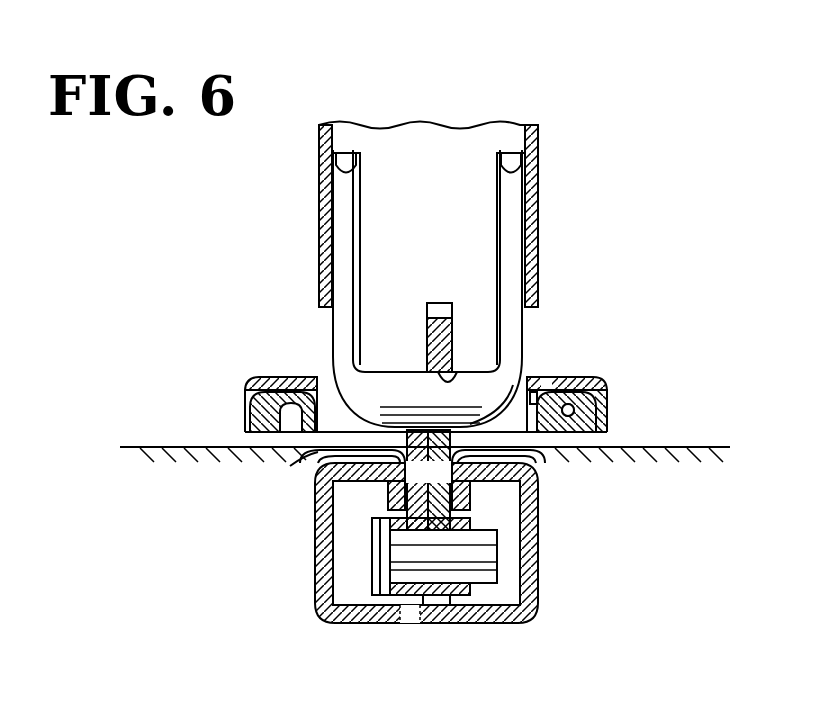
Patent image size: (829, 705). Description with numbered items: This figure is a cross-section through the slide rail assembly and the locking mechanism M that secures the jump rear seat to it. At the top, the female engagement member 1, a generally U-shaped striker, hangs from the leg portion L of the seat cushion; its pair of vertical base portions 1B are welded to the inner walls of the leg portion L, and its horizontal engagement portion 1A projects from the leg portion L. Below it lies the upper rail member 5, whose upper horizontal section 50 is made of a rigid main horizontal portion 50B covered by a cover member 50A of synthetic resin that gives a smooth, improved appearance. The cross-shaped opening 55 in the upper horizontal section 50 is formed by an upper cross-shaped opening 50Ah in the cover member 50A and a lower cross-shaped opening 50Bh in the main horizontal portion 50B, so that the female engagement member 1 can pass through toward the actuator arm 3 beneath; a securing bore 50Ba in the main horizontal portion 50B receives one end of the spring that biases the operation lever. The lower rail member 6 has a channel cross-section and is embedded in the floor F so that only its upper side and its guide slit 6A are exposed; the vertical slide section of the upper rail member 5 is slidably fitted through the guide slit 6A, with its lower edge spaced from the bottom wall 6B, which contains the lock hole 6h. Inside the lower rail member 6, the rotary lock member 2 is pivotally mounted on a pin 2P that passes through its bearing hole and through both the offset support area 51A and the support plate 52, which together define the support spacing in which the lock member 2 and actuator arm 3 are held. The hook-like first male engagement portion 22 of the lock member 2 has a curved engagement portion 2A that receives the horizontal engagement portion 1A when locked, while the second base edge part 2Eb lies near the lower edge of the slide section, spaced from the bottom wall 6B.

The female engagement member 1 is at (377, 288).
The horizontal engagement portion 1A is at (397, 372).
The vertical base portions 1B is at (320, 200).
The rotary lock member 2 is at (451, 367).
The first male engagement portion 22 is at (449, 304).
The curved engagement portion 2A is at (452, 368).
The pin 2P is at (458, 608).
The second base edge part 2Eb is at (445, 620).
The actuator arm 3 is at (318, 468).
The upper rail member 5 is at (451, 246).
The lower rail member 6 is at (444, 573).
The guide slit 6A is at (537, 457).
The bottom wall 6B is at (513, 623).
The lock hole 6h is at (410, 617).
The upper horizontal section 50 is at (503, 376).
The cover member 50A is at (474, 333).
The main horizontal portion 50B is at (474, 378).
The upper cross-shaped opening 50Ah is at (545, 378).
The lower cross-shaped opening 50Bh is at (537, 378).
The securing bore 50Ba is at (588, 433).
The offset support area 51A is at (477, 620).
The support plate 52 is at (383, 623).
The cross-shaped opening 55 is at (676, 233).
The floor F is at (178, 446).
The leg portion L is at (541, 194).
The locking mechanism M is at (655, 140).